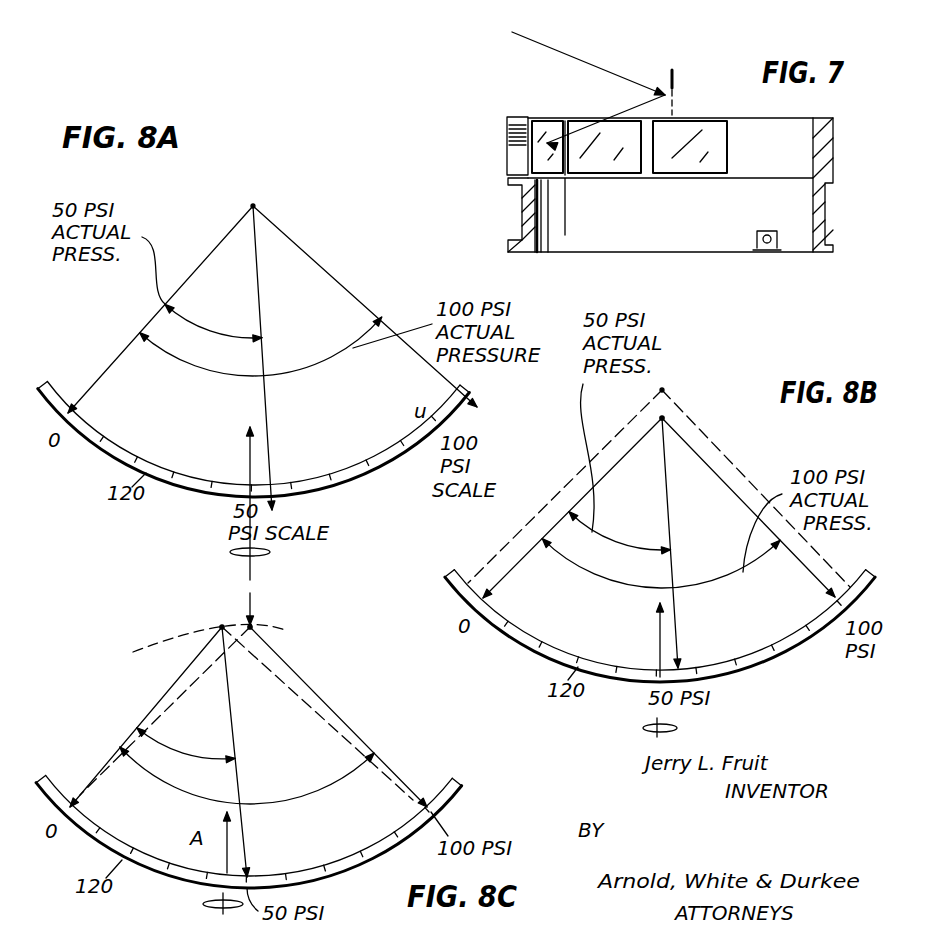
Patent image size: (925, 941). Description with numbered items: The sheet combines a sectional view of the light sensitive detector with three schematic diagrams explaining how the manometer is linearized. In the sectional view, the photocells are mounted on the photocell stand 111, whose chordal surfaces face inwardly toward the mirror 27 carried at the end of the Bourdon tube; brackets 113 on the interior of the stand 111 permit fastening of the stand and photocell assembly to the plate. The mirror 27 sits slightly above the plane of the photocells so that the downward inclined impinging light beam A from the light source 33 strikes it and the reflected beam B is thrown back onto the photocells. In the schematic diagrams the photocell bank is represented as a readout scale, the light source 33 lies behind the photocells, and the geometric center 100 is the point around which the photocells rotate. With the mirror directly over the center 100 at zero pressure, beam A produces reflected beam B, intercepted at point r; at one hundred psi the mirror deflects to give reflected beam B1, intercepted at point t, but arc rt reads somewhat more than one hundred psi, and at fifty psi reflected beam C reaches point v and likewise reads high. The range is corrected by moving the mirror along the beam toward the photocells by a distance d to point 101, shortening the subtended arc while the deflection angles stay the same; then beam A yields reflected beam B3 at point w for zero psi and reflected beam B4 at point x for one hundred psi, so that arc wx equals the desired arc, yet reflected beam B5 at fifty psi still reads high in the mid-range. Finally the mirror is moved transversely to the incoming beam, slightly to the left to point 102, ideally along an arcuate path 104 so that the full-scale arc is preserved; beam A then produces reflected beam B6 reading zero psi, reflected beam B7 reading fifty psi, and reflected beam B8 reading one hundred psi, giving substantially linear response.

In FIG. 7, the mirror 27 is at (676, 81).
In FIG. 7, the photocell stand 111 is at (833, 157).
In FIG. 7, the brackets 113 is at (757, 235).
In FIG. 8A, the geometric center 100 is at (256, 208).
In FIG. 8B, the geometric center 100 is at (666, 385).
In FIG. 8C, the geometric center 100 is at (252, 593).
In FIG. 8B, the point 101 is at (666, 419).
In FIG. 8C, the point 101 is at (254, 627).
In FIG. 8C, the point 102 is at (223, 626).
In FIG. 8C, the arcuate path 104 is at (153, 645).
In FIG. 8A, the light source 33 is at (230, 552).
In FIG. 8B, the light source 33 is at (678, 728).
In FIG. 8C, the light source 33 is at (205, 904).
In FIG. 7, the impinging light beam A is at (557, 50).
In FIG. 8A, the impinging light beam A is at (249, 450).
In FIG. 8B, the impinging light beam A is at (659, 630).
In FIG. 8C, the impinging light beam A is at (227, 842).
In FIG. 7, the reflected beam B is at (623, 112).
In FIG. 8A, the reflected beam B is at (228, 238).
In FIG. 8A, the reflected beam B1 is at (306, 252).
In FIG. 8B, the reflected beam B3 is at (620, 461).
In FIG. 8B, the reflected beam B4 is at (707, 465).
In FIG. 8B, the reflected beam B5 is at (672, 568).
In FIG. 8C, the reflected beam B6 is at (165, 696).
In FIG. 8C, the reflected beam B7 is at (233, 722).
In FIG. 8C, the reflected beam B8 is at (312, 690).
In FIG. 8A, the reflected beam C is at (268, 418).
In FIG. 8B, the distance d is at (666, 392).
In FIG. 8A, the point r is at (78, 416).
In FIG. 8B, the point r is at (468, 580).
In FIG. 8A, the point t is at (465, 389).
In FIG. 8A, the point v is at (275, 481).
In FIG. 8B, the point w is at (485, 598).
In FIG. 8C, the point w is at (70, 803).
In FIG. 8B, the point x is at (835, 602).
In FIG. 8C, the point x is at (427, 803).